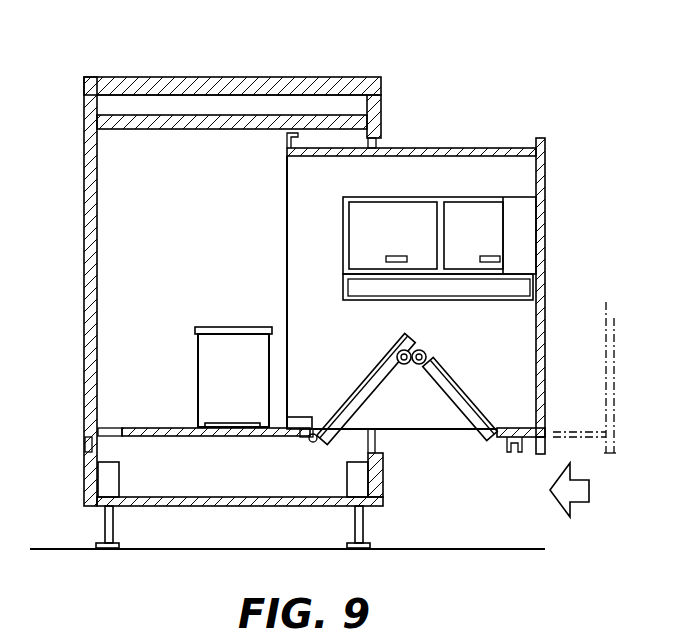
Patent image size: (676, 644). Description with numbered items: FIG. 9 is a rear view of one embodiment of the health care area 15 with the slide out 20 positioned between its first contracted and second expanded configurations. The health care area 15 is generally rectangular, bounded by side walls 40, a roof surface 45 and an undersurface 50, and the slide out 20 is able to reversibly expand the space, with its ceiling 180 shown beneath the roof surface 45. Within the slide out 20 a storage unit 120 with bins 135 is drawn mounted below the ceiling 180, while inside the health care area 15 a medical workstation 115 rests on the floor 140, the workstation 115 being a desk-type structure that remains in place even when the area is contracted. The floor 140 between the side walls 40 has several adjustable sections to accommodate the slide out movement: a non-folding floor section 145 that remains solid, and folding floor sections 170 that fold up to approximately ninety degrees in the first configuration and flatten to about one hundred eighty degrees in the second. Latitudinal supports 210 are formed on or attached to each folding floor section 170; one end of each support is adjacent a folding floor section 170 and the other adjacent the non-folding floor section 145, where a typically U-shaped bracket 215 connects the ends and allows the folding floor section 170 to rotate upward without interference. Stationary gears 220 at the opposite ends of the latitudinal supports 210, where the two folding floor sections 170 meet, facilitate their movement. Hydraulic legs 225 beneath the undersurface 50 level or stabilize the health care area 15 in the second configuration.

The health care area 15 is at (349, 58).
The slide out 20 is at (549, 146).
The side wall 40 is at (85, 96).
The roof surface 45 is at (150, 78).
The undersurface 50 is at (220, 497).
The medical workstation 115 is at (247, 325).
The drawer assembly 120 is at (508, 216).
The storage bin 135 is at (363, 216).
The floor 140 is at (207, 441).
The non-folding floor section 145 is at (241, 422).
The folding floor section 170 is at (362, 372).
The ceiling 180 is at (450, 137).
The latitudinal support 210 is at (445, 425).
The bracket 215 is at (316, 450).
The stationary gear 220 is at (405, 350).
The hydraulic leg 225 is at (104, 527).